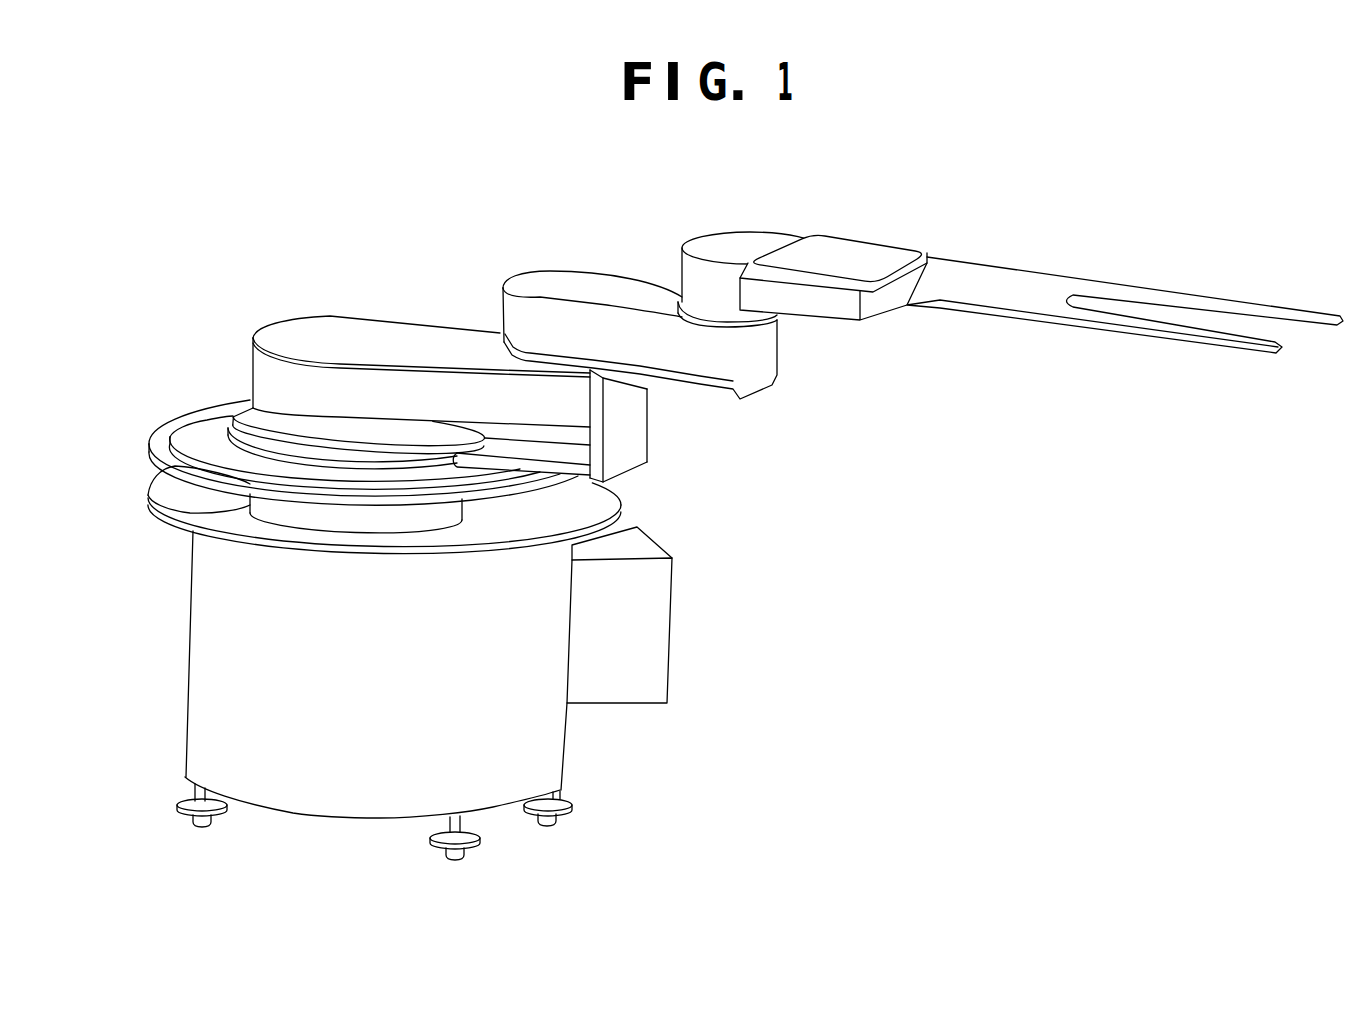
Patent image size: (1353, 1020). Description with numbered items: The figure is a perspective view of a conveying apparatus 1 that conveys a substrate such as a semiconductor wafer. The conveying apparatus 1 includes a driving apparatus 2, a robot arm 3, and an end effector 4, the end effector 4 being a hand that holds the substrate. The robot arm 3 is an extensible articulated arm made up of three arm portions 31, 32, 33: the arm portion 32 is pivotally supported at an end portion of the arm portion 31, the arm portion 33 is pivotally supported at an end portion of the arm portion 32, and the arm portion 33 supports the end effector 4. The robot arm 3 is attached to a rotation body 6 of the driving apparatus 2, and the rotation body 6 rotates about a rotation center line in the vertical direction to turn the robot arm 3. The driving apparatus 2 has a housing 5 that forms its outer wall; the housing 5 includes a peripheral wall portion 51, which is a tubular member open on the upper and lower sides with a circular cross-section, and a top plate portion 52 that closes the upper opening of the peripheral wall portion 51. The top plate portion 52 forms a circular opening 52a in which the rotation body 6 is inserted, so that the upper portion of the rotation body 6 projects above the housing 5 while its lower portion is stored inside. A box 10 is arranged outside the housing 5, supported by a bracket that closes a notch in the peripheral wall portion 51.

The conveying apparatus 1 is at (247, 199).
The driving apparatus 2 is at (627, 771).
The robot arm 3 is at (211, 295).
The arm portion 31 is at (390, 338).
The arm portion 32 is at (560, 271).
The arm portion 33 is at (682, 240).
The end effector 4 is at (1063, 278).
The housing 5 is at (162, 604).
The peripheral wall portion 51 is at (192, 706).
The top plate portion 52 is at (624, 500).
The opening 52a is at (148, 508).
The rotation body 6 is at (183, 471).
The box 10 is at (673, 596).